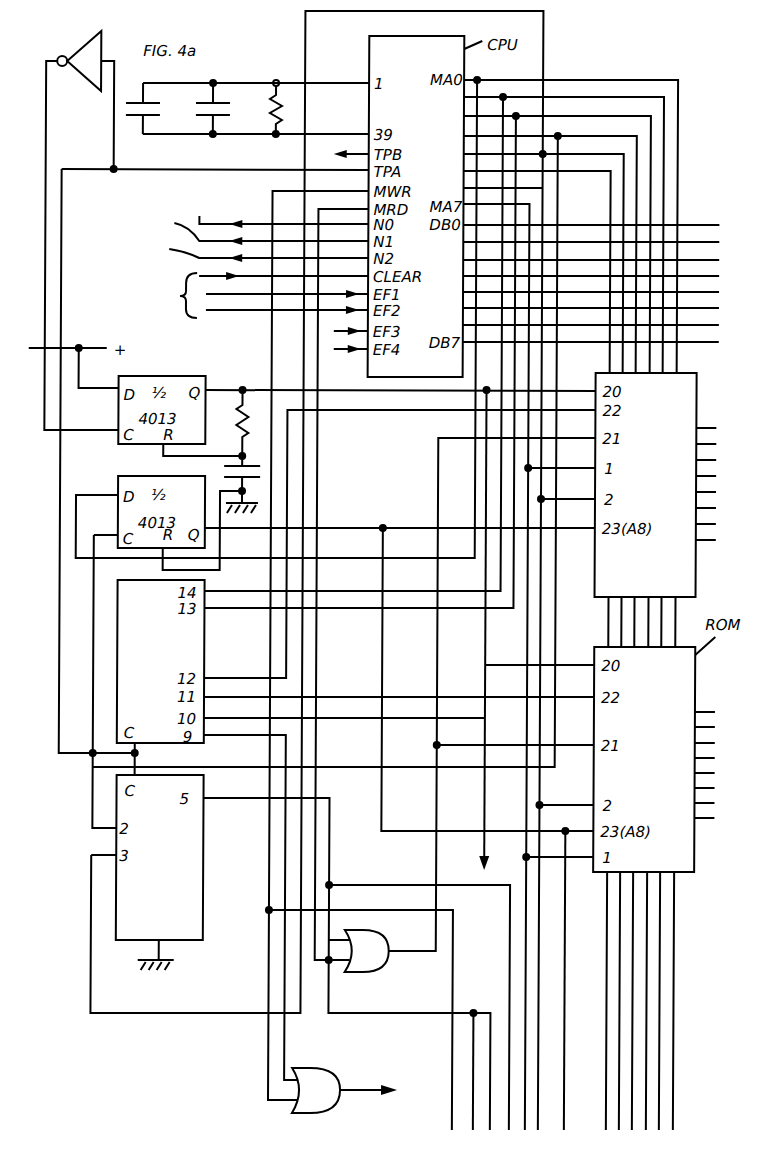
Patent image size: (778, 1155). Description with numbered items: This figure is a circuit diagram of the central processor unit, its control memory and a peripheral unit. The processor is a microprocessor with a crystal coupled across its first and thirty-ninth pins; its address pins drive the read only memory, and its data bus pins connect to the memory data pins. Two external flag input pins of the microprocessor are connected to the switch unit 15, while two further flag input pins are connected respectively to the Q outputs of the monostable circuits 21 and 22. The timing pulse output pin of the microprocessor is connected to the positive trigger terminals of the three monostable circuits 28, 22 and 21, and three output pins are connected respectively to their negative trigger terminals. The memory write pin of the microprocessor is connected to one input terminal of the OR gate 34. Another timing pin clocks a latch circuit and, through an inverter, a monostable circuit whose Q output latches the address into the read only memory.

The OR gate 34 is at (341, 1079).
The monostable circuit 21 is at (272, 214).
The monostable circuit 22 is at (247, 230).
The monostable circuit 28 is at (241, 256).
The switch unit 15 is at (247, 295).